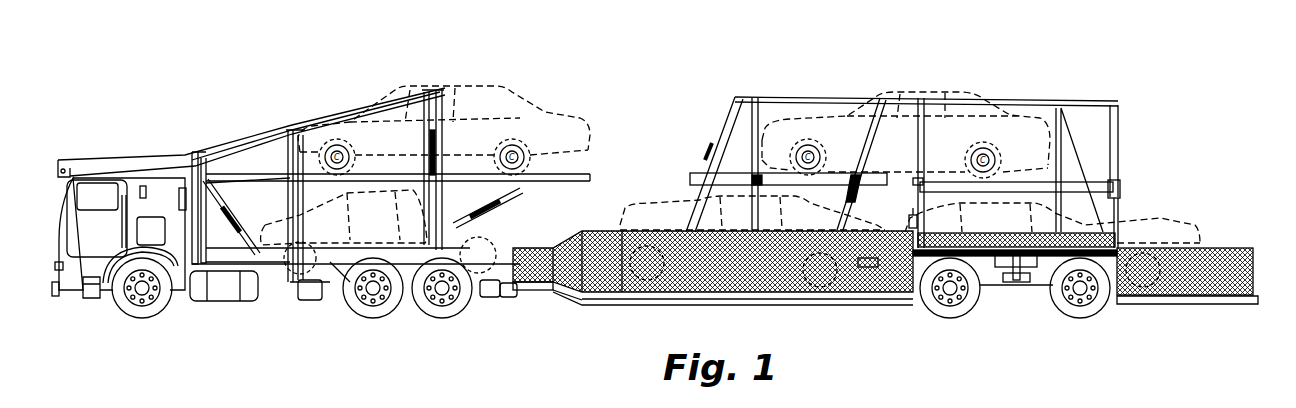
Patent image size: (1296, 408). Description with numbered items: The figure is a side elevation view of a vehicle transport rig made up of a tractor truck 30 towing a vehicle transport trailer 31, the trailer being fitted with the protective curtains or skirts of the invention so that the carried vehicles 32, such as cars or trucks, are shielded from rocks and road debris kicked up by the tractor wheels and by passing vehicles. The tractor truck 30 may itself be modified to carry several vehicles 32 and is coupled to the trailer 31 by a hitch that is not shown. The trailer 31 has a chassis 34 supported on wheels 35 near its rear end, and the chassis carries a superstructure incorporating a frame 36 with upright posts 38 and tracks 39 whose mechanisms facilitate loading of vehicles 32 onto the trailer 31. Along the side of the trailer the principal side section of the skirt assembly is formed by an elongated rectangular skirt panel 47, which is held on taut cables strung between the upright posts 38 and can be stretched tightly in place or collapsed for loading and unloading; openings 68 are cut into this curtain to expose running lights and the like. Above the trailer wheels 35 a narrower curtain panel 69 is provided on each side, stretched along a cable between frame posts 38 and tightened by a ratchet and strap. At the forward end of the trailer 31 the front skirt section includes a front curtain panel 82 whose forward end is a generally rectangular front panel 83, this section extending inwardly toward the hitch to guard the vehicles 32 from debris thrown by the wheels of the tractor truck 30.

The tractor truck 30 is at (203, 112).
The vehicle transport trailer 31 is at (1152, 100).
The carried vehicles 32 is at (516, 93).
The chassis 34 is at (1178, 300).
The wheels 35 is at (978, 307).
The frame 36 is at (1015, 88).
The upright posts 38 is at (720, 130).
The tracks 39 is at (745, 177).
The skirt panel 47 is at (628, 230).
The openings 68 is at (868, 263).
The curtain panel 69 is at (1123, 230).
The front curtain panel 82 is at (532, 283).
The front panel 83 is at (565, 293).